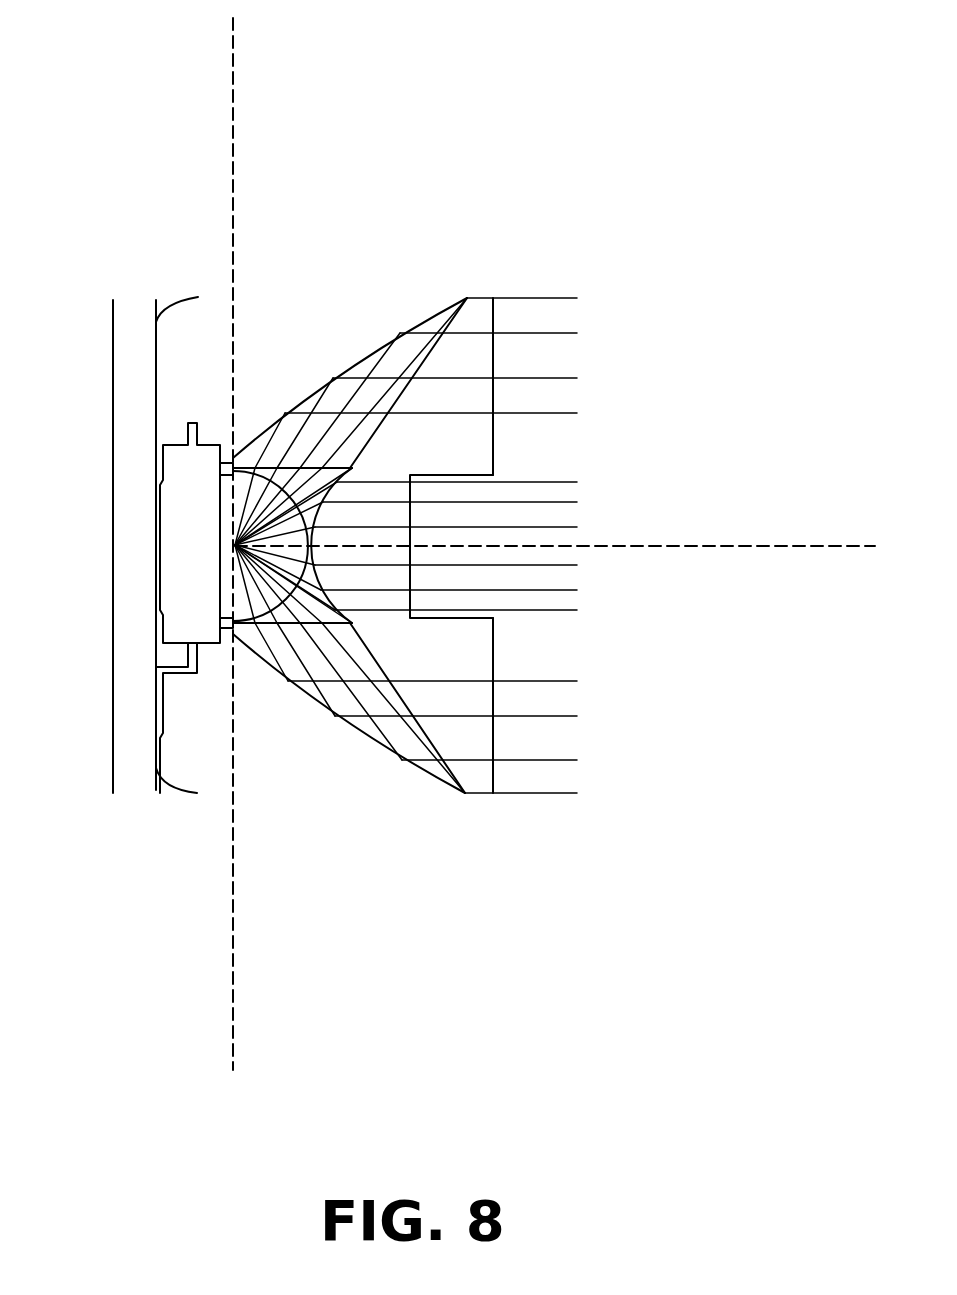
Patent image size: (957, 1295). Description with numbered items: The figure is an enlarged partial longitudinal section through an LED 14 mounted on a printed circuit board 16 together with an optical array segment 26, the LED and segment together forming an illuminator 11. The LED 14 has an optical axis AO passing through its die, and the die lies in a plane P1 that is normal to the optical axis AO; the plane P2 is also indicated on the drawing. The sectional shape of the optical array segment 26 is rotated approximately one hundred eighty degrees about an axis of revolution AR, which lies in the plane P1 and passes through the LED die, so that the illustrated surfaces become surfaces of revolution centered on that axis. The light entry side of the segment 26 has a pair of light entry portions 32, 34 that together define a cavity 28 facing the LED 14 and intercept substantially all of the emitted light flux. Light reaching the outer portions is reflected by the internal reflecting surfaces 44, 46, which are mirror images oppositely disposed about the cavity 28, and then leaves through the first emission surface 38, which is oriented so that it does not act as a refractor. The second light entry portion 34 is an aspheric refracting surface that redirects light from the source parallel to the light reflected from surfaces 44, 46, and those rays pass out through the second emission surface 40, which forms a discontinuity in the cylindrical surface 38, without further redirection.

The illuminator 11 is at (493, 275).
The LED 14 is at (185, 533).
The printed circuit board 16 is at (131, 783).
The optical array segment 26 is at (491, 740).
The cavity 28 is at (308, 508).
The light entry portion 32 is at (250, 468).
The second light entry portion 34 is at (338, 600).
The first emission surface 38 is at (494, 441).
The second emission surface 40 is at (412, 580).
The internal reflecting surface 44 is at (315, 378).
The internal reflecting surface 46 is at (325, 716).
The plane P1 is at (236, 130).
The optical axis plane P2 is at (652, 547).
The axis of revolution AR is at (233, 956).
The optical axis AO is at (848, 555).